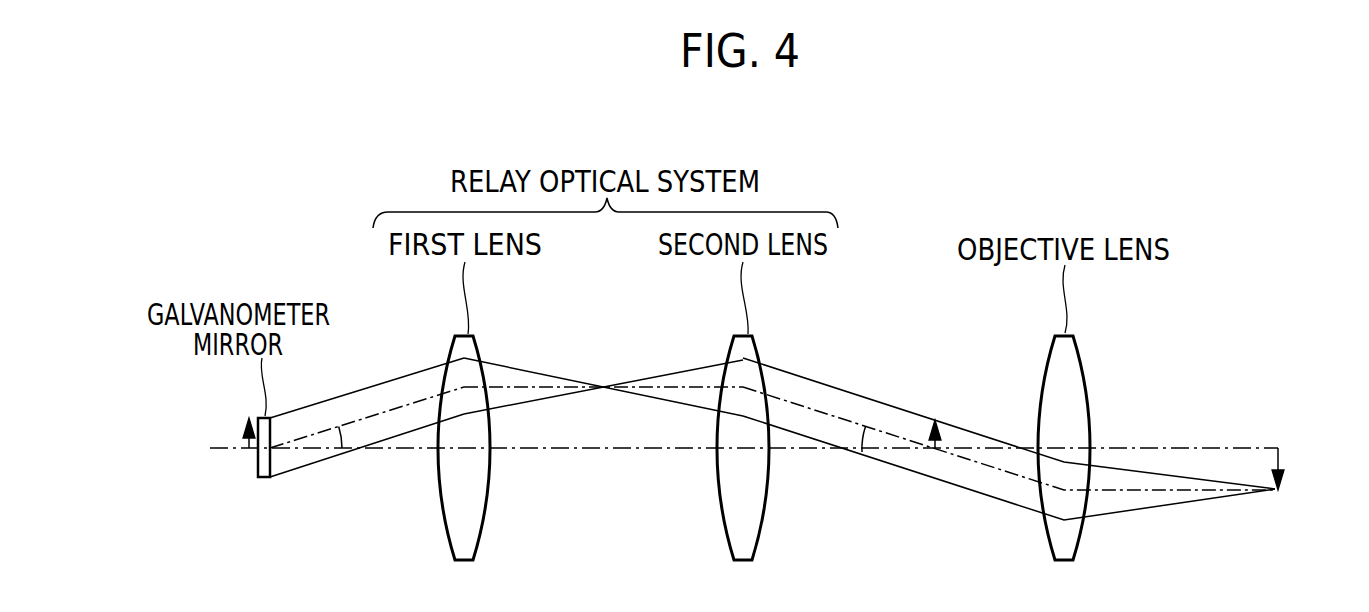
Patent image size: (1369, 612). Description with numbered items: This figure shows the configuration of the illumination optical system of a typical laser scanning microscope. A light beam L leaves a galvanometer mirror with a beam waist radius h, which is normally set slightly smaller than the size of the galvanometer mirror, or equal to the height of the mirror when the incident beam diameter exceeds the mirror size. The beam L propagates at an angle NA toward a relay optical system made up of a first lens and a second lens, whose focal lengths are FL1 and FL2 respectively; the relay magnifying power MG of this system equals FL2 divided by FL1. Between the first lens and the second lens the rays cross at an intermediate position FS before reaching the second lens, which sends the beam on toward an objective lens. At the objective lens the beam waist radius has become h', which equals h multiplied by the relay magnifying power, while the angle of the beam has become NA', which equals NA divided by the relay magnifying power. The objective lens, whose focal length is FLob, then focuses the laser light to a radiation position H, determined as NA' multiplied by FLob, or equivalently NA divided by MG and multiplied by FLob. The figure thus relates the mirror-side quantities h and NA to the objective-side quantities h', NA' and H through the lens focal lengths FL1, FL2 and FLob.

The light beam L is at (388, 380).
The field stop / intermediate image position FS is at (603, 380).
The angle of the light beam NA is at (357, 485).
The angle of the light beam NA' is at (861, 482).
The radius of the beam waist of the light beam output from the galvanometer mirror h is at (239, 430).
The radius of the beam waist of the light beam entering the objective lens h' is at (941, 413).
The radiation position of laser light H is at (1296, 469).
The focal length of the first lens FL1 is at (464, 471).
The focal length of the second lens FL2 is at (743, 471).
The focal length of the objective lens FLob is at (1063, 471).